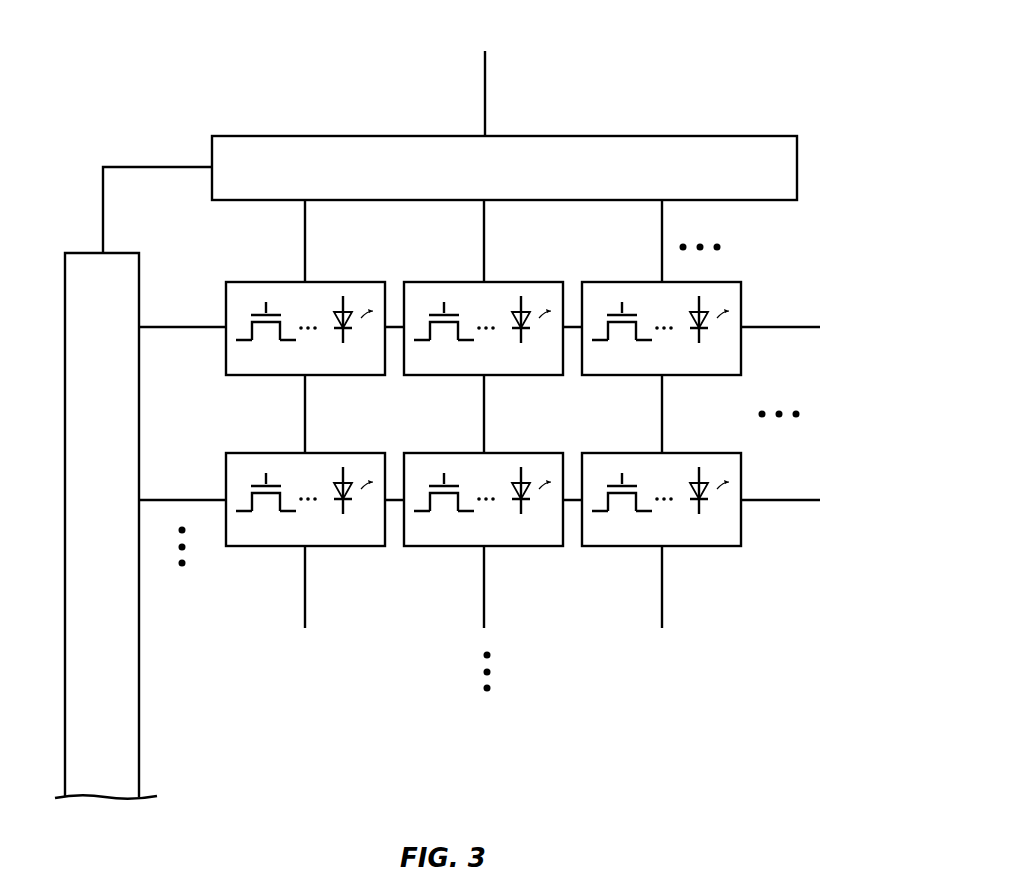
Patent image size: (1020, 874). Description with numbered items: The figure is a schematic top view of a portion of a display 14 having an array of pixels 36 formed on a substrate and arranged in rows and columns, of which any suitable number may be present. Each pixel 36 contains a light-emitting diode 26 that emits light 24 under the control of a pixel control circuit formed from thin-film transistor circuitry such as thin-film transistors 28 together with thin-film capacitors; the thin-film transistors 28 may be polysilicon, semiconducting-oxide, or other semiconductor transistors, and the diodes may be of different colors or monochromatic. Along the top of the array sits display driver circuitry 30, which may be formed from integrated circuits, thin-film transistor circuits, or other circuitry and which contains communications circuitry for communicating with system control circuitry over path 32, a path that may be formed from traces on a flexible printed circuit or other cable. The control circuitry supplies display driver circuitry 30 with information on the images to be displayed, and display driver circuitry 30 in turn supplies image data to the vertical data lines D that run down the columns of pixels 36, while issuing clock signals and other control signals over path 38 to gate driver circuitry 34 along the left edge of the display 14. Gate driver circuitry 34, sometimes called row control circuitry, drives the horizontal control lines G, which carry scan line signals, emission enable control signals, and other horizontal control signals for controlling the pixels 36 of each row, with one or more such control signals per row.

The display 14 is at (696, 48).
The light 24 is at (722, 490).
The light-emitting diode 26 is at (706, 533).
The thin-film transistors 28 is at (622, 534).
The display driver circuitry 30 is at (270, 148).
The path 32 is at (486, 68).
The gate driver circuitry 34 is at (130, 760).
The pixels 36 is at (610, 377).
The path 38 is at (157, 166).